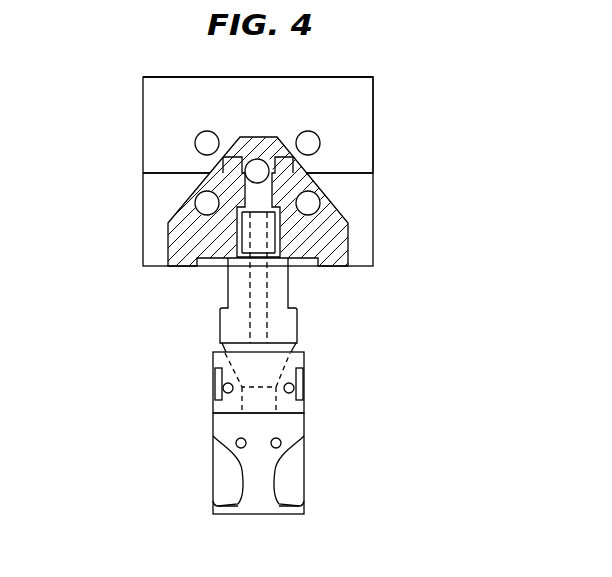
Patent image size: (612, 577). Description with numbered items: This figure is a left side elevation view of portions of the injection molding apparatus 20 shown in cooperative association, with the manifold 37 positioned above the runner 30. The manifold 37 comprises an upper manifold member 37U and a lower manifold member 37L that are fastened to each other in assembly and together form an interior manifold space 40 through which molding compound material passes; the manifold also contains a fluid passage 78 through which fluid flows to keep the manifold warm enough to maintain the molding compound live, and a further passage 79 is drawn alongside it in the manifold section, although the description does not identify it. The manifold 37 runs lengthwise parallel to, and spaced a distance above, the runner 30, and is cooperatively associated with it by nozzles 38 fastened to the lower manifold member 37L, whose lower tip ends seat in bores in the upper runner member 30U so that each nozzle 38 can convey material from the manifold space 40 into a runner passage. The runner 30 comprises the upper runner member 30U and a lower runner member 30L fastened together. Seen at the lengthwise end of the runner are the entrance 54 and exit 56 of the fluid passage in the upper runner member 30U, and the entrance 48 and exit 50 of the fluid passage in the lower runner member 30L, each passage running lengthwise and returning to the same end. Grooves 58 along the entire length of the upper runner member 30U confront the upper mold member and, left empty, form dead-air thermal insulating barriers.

The injection molding apparatus 20 is at (406, 57).
The manifold 37 is at (142, 78).
The upper manifold member 37U is at (360, 102).
The lower manifold member 37L is at (360, 193).
The interior manifold space 40 is at (256, 160).
The fluid passage 78 is at (308, 142).
The lower locating pins 79 is at (307, 200).
The nozzle 38 is at (230, 323).
The runner 30 is at (305, 512).
The upper runner member 30U is at (305, 353).
The lower runner member 30L is at (263, 507).
The grooves 58 is at (215, 380).
The exit 56 is at (226, 393).
The entrance 54 is at (291, 392).
The exit 50 is at (238, 448).
The entrance 48 is at (281, 445).